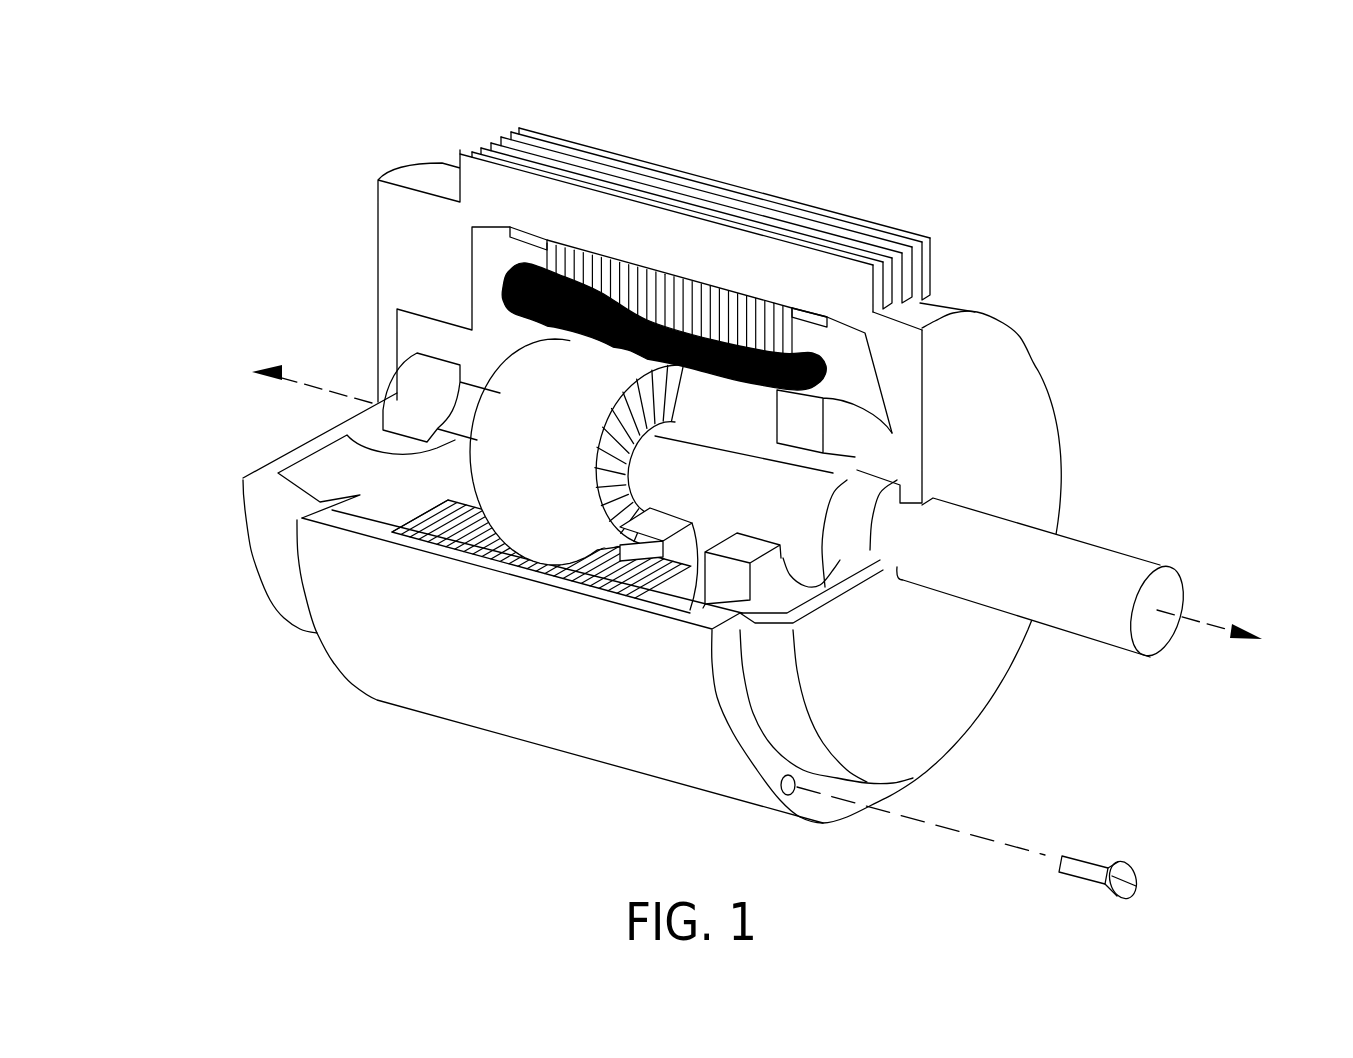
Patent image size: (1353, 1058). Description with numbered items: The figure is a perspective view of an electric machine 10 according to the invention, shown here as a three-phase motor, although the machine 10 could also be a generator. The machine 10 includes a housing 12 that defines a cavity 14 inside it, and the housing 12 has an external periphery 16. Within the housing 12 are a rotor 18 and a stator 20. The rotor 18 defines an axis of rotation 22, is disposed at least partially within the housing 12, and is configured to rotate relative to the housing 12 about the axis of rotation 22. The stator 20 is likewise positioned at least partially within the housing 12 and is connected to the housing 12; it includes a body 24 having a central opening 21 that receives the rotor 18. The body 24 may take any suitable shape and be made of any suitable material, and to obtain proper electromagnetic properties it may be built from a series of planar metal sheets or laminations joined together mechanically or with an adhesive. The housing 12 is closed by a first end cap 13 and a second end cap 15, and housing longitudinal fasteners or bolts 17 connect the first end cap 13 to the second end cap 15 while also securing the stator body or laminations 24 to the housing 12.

The electric machine 10 is at (1030, 176).
The housing 12 is at (418, 150).
The first end cap 13 is at (940, 723).
The cavity 14 is at (480, 327).
The second end cap 15 is at (280, 615).
The external periphery 16 is at (933, 310).
The bolts 17 is at (1100, 855).
The rotor 18 is at (475, 487).
The stator 20 is at (614, 300).
The central opening 21 is at (757, 430).
The axis of rotation 22 is at (1215, 608).
The body 24 is at (727, 335).